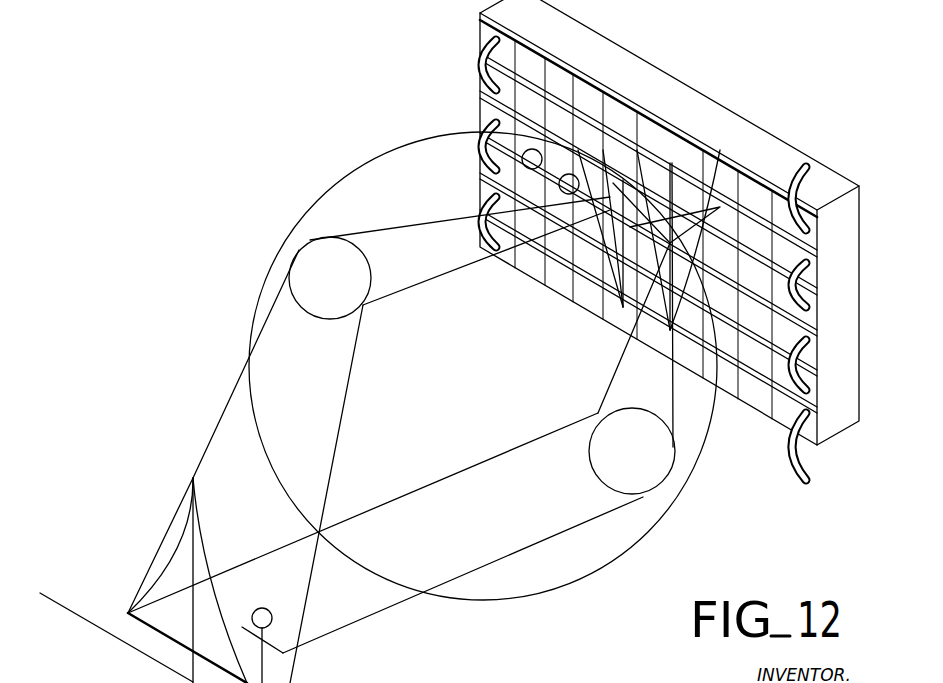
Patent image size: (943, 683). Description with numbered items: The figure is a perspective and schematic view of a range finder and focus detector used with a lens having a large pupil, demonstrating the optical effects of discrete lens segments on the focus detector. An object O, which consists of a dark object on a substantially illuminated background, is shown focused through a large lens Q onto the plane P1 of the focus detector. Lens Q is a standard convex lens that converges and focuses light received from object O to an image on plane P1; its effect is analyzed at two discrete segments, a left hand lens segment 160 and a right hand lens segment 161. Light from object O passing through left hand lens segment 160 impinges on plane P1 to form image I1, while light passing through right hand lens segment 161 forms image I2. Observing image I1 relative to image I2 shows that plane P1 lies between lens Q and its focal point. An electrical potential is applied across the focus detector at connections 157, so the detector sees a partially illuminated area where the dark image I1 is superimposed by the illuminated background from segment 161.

The plane of the focus detector P1 is at (515, 82).
The large lens Q is at (340, 183).
The connections 157 is at (807, 180).
The left hand lens segment 160 is at (290, 280).
The right hand lens segment 161 is at (670, 475).
The object O is at (177, 550).
The image I1 is at (557, 185).
The image I2 is at (575, 153).